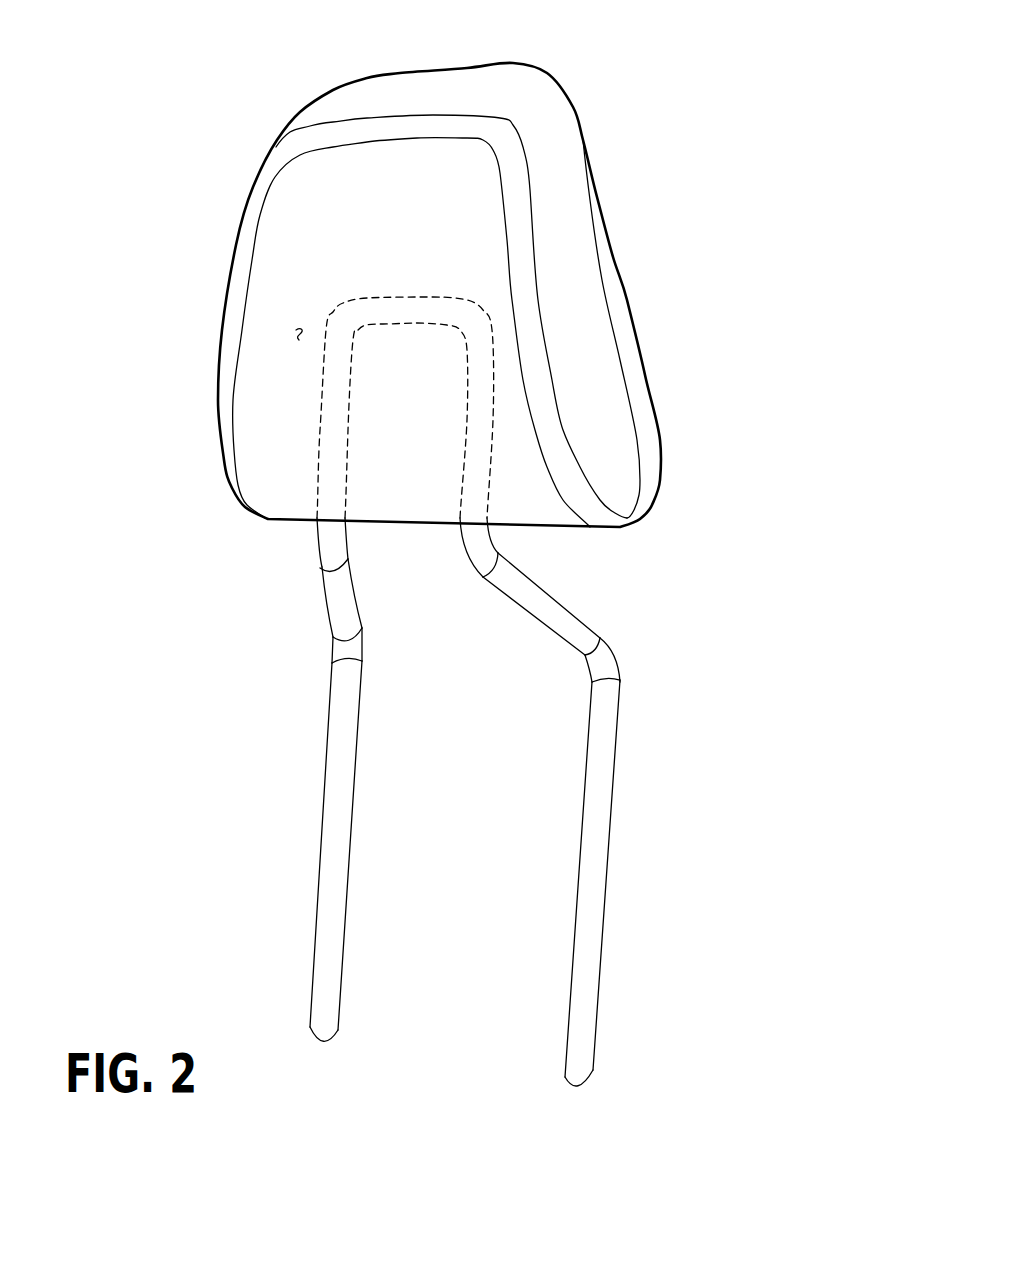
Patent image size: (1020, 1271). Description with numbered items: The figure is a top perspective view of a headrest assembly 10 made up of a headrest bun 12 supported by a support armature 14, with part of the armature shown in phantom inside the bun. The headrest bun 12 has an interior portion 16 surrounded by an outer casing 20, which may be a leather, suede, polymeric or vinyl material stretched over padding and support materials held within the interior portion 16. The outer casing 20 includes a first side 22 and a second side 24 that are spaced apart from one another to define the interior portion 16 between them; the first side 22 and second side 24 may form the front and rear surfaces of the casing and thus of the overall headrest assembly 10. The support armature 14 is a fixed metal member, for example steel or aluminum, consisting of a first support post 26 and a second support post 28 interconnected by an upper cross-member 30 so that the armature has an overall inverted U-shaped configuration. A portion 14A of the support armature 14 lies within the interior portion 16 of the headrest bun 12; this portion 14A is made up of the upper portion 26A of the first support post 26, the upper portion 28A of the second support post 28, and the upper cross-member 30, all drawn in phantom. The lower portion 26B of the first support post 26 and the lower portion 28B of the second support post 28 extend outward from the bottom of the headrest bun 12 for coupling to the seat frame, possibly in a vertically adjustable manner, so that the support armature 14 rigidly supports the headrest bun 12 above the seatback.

The headrest assembly 10 is at (707, 119).
The headrest bun 12 is at (645, 225).
The support armature 14 is at (658, 672).
The portion of the support armature 14A is at (502, 443).
The interior portion 16 is at (297, 331).
The outer casing 20 is at (409, 99).
The first side 22 is at (267, 447).
The second side 24 is at (632, 308).
The first support post 26 is at (313, 718).
The upper portion of the first support post 26A is at (320, 417).
The lower portion of the first support post 26B is at (331, 811).
The second support post 28 is at (627, 773).
The upper portion of the second support post 28A is at (482, 412).
The lower portion of the second support post 28B is at (597, 842).
The upper cross-member 30 is at (393, 293).